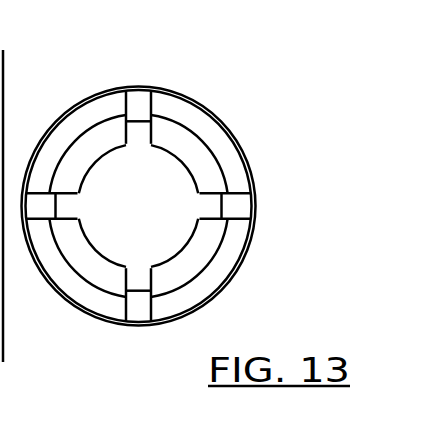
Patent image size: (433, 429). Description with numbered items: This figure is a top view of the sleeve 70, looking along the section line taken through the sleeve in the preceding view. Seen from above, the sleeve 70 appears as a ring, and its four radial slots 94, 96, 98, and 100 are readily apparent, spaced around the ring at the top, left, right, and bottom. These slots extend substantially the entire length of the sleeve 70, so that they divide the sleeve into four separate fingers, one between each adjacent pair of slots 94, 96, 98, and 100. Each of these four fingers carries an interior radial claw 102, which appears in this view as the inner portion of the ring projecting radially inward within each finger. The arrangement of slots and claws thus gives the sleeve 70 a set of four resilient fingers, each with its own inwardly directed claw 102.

The sleeve 70 is at (191, 71).
The radial slot 94 is at (36, 206).
The radial slot 96 is at (137, 107).
The radial slot 98 is at (237, 208).
The radial slot 100 is at (138, 303).
The interior radial claw 102 is at (178, 159).